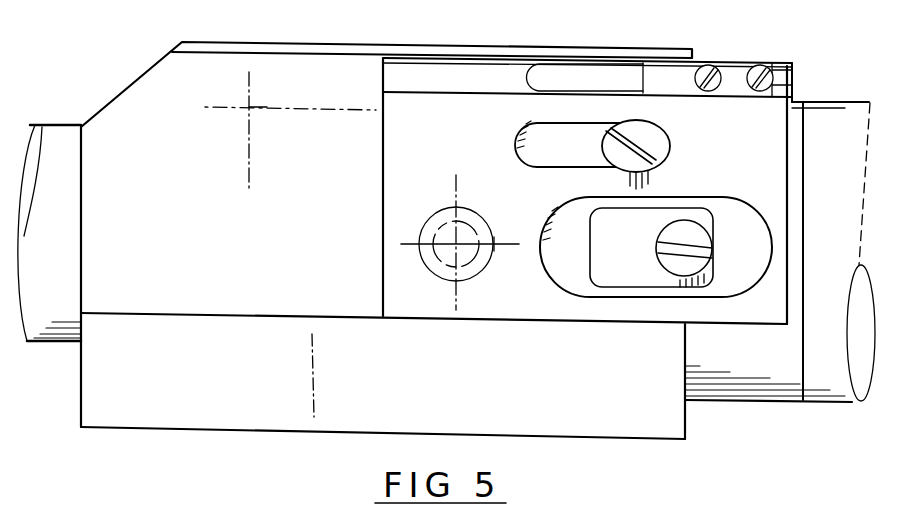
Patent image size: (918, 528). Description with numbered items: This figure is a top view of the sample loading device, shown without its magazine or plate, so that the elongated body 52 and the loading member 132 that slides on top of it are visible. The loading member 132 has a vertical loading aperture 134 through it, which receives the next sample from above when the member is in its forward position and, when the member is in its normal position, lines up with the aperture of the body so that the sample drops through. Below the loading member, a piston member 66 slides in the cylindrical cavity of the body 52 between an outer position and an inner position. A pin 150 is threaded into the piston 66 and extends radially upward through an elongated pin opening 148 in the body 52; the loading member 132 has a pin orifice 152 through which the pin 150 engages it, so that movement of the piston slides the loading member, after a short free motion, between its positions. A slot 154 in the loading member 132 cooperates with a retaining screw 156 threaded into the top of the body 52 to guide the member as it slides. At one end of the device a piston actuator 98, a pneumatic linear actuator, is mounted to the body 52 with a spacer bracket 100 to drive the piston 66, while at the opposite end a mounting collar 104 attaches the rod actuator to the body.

The elongated body 52 is at (228, 177).
The mounting collar 104 is at (66, 227).
The loading member 132 is at (433, 157).
The loading aperture 134 is at (443, 194).
The pin 150 is at (685, 237).
The pin orifice 152 is at (578, 156).
The slot 154 is at (597, 75).
The retaining screw 156 is at (717, 64).
The piston member 66 is at (623, 235).
The pin opening 148 is at (637, 260).
The piston actuator 98 is at (849, 165).
The spacer bracket 100 is at (772, 359).